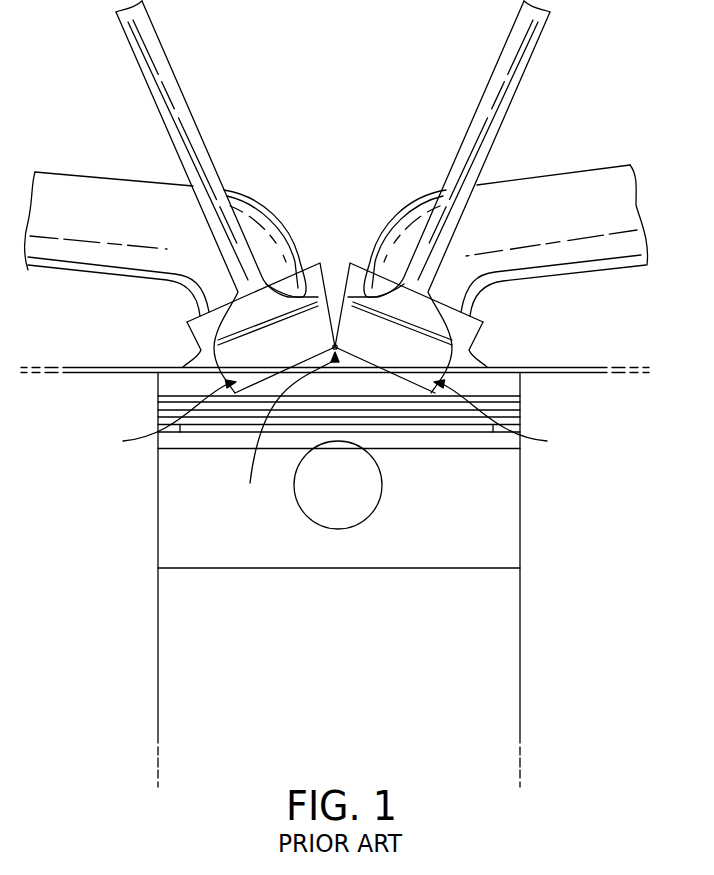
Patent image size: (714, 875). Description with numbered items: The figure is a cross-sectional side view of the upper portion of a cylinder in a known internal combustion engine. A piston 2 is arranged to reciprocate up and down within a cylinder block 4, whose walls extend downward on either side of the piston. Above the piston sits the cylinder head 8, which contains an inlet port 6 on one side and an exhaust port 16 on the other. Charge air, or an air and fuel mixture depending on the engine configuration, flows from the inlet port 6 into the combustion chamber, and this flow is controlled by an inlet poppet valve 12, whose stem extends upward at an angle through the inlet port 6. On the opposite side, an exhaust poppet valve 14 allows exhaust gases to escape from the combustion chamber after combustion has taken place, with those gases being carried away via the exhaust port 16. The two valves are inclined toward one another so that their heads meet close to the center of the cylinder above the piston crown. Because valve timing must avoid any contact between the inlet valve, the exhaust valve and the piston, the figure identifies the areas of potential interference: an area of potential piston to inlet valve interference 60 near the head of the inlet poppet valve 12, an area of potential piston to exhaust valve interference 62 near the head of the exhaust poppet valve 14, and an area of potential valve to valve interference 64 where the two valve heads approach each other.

The piston 2 is at (345, 558).
The cylinder block 4 is at (118, 653).
The inlet port 6 is at (82, 279).
The cylinder head 8 is at (152, 340).
The inlet poppet valve 12 is at (128, 54).
The exhaust poppet valve 14 is at (537, 52).
The exhaust port 16 is at (596, 172).
The area of potential piston to inlet valve interference 60 is at (166, 417).
The area of potential piston to exhaust valve interference 62 is at (505, 417).
The area of potential valve to valve interference 64 is at (287, 429).